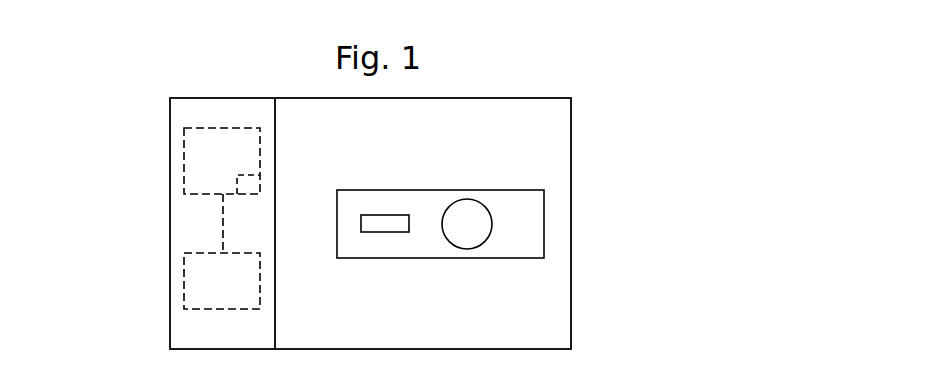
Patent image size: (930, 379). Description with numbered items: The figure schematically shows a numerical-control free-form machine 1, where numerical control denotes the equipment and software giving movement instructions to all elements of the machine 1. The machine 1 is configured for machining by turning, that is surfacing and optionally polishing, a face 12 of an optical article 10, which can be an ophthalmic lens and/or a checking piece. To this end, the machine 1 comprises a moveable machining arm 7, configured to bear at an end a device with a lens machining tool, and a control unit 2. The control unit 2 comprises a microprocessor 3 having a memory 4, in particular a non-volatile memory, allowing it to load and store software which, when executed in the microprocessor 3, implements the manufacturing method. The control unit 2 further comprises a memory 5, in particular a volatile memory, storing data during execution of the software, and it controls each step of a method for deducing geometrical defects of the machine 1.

The numerical-control free-form machine 1 is at (571, 150).
The control unit 2 is at (190, 335).
The microprocessor 3 is at (185, 163).
The memory 4 is at (247, 183).
The memory 5 is at (190, 265).
The moveable machining arm 7 is at (385, 223).
The optical article 10 is at (480, 247).
The face 12 is at (457, 233).